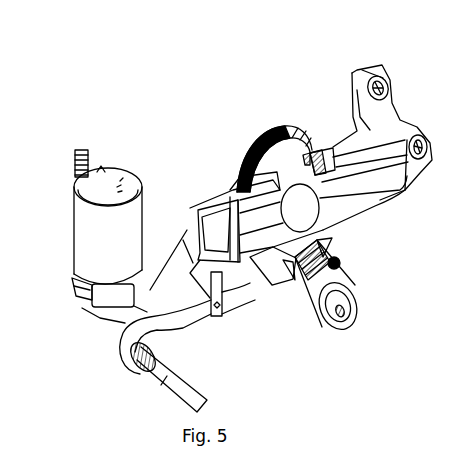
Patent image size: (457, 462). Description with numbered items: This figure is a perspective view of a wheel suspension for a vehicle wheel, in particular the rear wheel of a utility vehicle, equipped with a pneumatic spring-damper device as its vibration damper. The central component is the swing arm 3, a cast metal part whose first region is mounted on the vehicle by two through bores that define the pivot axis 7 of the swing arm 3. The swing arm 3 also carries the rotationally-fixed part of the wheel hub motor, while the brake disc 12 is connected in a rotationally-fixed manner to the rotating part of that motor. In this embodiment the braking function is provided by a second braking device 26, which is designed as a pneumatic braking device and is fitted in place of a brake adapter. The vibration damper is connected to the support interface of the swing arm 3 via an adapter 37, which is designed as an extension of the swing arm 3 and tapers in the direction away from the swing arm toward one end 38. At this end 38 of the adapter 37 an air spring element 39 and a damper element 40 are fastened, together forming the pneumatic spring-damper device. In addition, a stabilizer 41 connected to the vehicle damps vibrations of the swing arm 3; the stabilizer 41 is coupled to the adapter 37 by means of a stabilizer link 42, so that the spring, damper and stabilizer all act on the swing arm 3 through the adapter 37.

The swing arm 3 is at (346, 215).
The pivot axis 7 is at (393, 102).
The brake disc 12 is at (285, 163).
The second braking device 26 is at (330, 325).
The adapter 37 is at (189, 238).
The end 38 is at (80, 321).
The air spring element 39 is at (74, 228).
The damper element 40 is at (83, 150).
The stabilizer 41 is at (167, 377).
The stabilizer link 42 is at (230, 280).